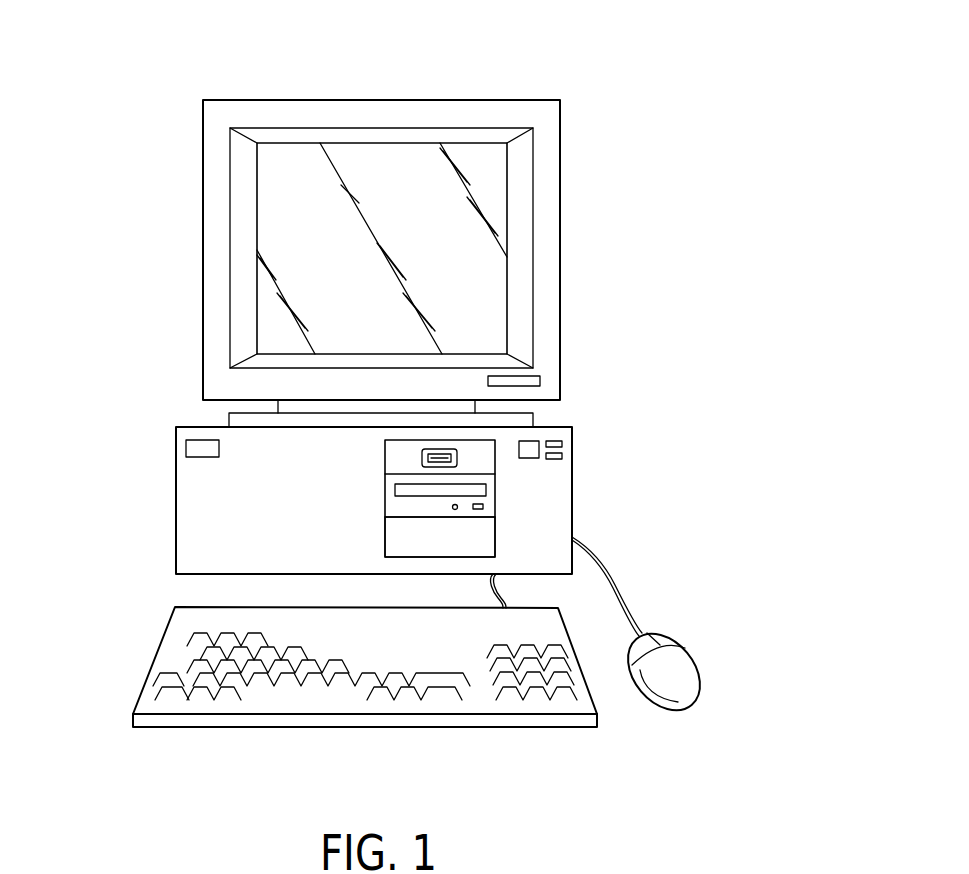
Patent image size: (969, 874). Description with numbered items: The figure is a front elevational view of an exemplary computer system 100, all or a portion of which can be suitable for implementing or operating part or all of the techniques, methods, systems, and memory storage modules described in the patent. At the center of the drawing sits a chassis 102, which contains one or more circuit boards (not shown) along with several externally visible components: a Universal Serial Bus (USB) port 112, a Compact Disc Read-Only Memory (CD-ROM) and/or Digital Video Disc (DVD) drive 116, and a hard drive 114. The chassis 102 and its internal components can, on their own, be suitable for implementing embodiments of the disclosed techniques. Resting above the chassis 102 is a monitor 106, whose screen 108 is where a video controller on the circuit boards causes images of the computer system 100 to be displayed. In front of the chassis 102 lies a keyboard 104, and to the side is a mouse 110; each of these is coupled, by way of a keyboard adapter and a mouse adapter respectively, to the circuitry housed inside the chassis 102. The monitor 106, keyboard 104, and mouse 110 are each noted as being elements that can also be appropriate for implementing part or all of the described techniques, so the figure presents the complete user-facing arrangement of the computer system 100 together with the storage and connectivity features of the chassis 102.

The computer system 100 is at (553, 78).
The chassis 102 is at (175, 502).
The keyboard 104 is at (160, 650).
The monitor 106 is at (275, 100).
The screen 108 is at (303, 248).
The mouse 110 is at (683, 662).
The Universal Serial Bus (USB) port 112 is at (460, 453).
The hard drive 114 is at (488, 536).
The Compact Disc Read-Only Memory (CD-ROM) and/or Digital Video Disc (DVD) drive 116 is at (488, 496).